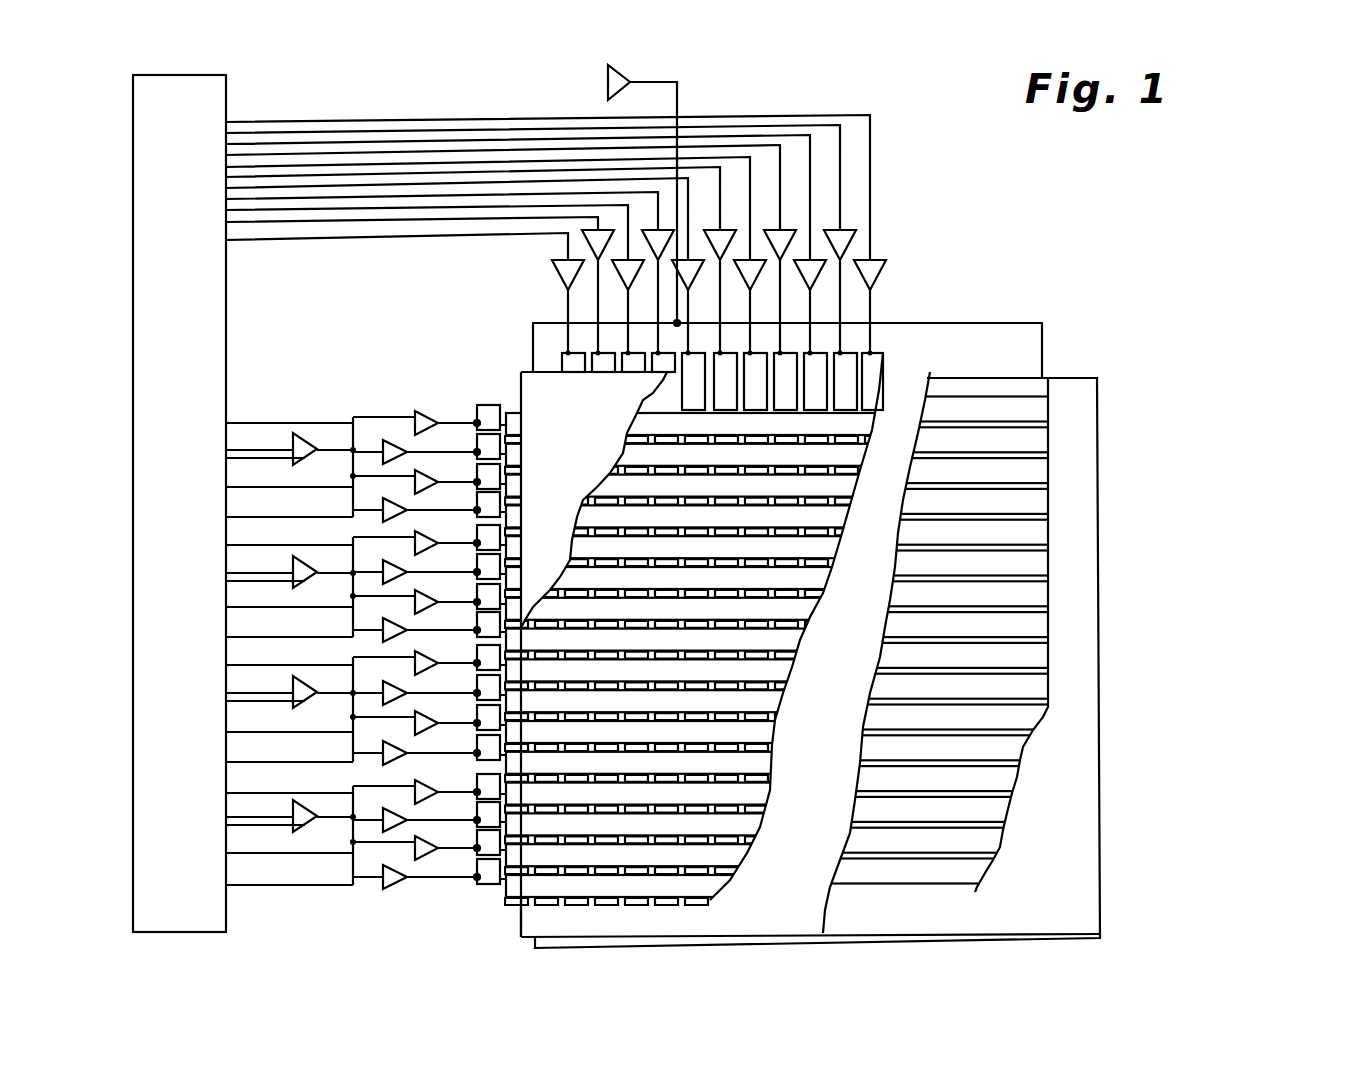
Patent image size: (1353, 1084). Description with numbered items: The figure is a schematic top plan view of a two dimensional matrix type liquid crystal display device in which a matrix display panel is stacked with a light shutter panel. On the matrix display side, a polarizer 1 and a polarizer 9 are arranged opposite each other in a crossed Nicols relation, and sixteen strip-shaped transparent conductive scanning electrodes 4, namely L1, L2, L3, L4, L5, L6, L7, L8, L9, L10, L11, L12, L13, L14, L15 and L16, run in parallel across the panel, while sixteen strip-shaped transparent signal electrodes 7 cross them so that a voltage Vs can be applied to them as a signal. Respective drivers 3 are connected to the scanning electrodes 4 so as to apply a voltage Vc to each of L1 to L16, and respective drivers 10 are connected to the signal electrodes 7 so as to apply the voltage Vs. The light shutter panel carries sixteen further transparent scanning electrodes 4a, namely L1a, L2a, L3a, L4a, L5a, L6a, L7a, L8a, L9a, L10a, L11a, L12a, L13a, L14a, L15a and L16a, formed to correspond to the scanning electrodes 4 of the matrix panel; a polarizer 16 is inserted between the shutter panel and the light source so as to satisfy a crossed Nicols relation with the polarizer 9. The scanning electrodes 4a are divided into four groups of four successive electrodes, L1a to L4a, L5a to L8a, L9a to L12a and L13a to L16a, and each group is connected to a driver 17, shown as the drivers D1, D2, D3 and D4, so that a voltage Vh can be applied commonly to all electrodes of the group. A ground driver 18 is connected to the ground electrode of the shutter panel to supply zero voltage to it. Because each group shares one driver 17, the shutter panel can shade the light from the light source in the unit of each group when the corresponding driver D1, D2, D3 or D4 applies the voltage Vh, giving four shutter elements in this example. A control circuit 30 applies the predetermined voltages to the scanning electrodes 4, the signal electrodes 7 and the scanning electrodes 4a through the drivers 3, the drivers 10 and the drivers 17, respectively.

The polarizer 1 is at (517, 390).
The drivers 3 is at (383, 440).
The scanning electrodes 4 is at (507, 417).
The scanning electrodes 4a is at (1225, 903).
The signal electrodes 7 is at (883, 353).
The polarizer 9 is at (523, 922).
The drivers 10 is at (853, 228).
The polarizer 16 is at (1080, 917).
The driver 17 is at (300, 433).
The ground driver 18 is at (605, 82).
The control circuit 30 is at (208, 102).
The driver D1 is at (291, 467).
The driver D2 is at (291, 587).
The driver D3 is at (291, 709).
The driver D4 is at (291, 835).
The scanning electrode L1 is at (858, 424).
The scanning electrode L2 is at (849, 455).
The scanning electrode L3 is at (840, 486).
The scanning electrode L4 is at (831, 517).
The scanning electrode L5 is at (823, 548).
The scanning electrode L6 is at (805, 578).
The scanning electrode L7 is at (799, 609).
The scanning electrode L8 is at (785, 640).
The scanning electrode L9 is at (776, 670).
The scanning electrode L10 is at (766, 701).
The scanning electrode L11 is at (758, 732).
The scanning electrode L12 is at (756, 763).
The scanning electrode L13 is at (754, 794).
The scanning electrode L14 is at (746, 824).
The scanning electrode L15 is at (731, 855).
The scanning electrode L16 is at (710, 886).
The scanning electrode L1a is at (1038, 407).
The scanning electrode L2a is at (1038, 437).
The scanning electrode L3a is at (1038, 469).
The scanning electrode L4a is at (1040, 499).
The scanning electrode L5a is at (1040, 530).
The scanning electrode L6a is at (1042, 561).
The scanning electrode L7a is at (1045, 592).
The scanning electrode L8a is at (1047, 622).
The scanning electrode L9a is at (1040, 653).
The scanning electrode L10a is at (1040, 683).
The scanning electrode L11a is at (1037, 717).
The scanning electrode L12a is at (1018, 747).
The scanning electrode L13a is at (1012, 780).
The scanning electrode L14a is at (1002, 812).
The scanning electrode L15a is at (997, 838).
The scanning electrode L16a is at (973, 868).